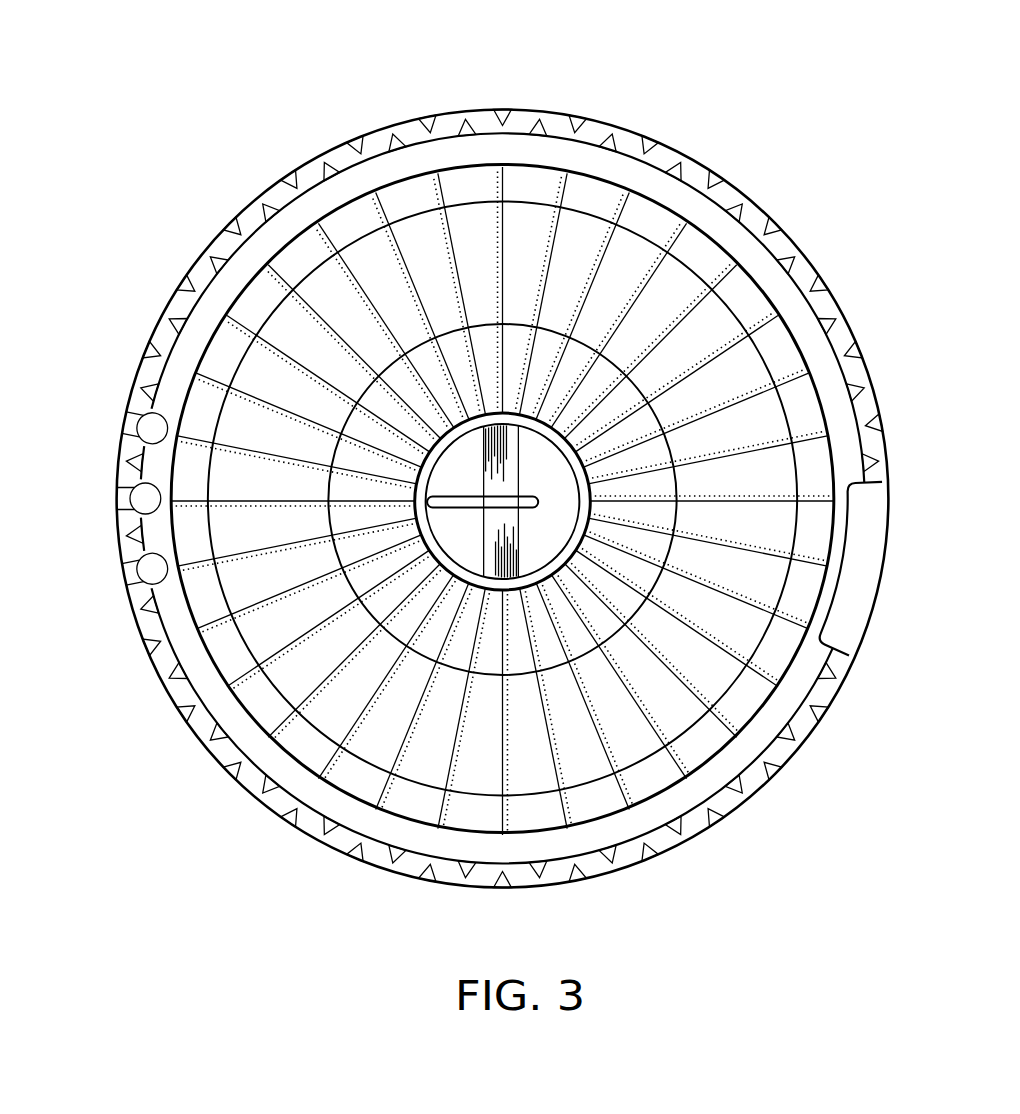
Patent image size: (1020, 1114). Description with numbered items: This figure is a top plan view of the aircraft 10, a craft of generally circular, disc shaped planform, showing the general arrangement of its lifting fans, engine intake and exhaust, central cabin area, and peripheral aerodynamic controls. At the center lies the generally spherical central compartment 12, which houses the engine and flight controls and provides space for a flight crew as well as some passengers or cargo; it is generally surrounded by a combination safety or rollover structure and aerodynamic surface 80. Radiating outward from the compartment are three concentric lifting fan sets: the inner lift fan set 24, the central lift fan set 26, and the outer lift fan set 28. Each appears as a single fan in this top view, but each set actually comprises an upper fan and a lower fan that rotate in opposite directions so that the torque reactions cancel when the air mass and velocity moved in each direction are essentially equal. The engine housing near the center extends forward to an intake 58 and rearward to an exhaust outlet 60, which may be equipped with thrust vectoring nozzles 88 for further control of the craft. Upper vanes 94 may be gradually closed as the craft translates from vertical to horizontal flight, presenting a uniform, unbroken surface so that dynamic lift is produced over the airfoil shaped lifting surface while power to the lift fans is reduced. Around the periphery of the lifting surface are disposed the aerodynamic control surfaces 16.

The aircraft 10 is at (300, 897).
The central compartment 12 is at (558, 484).
The aerodynamic control surfaces 16 is at (307, 160).
The inner lift fan set 24 is at (499, 669).
The central lift fan set 26 is at (494, 757).
The outer lift fan set 28 is at (491, 824).
The intake 58 is at (875, 592).
The exhaust outlet 60 is at (113, 426).
The safety or rollover structure and aerodynamic surface 80 is at (477, 511).
The thrust vectoring nozzles 88 is at (118, 510).
The upper vanes 94 is at (443, 225).